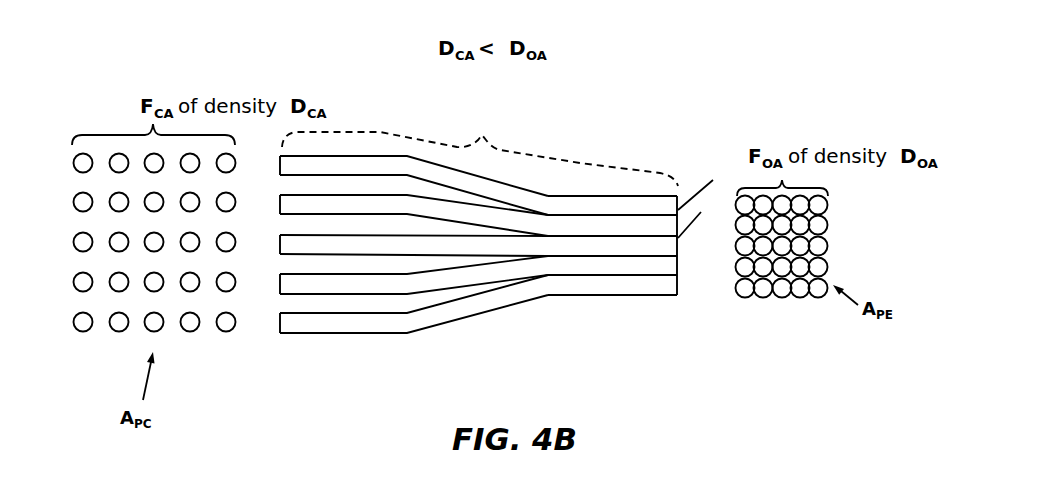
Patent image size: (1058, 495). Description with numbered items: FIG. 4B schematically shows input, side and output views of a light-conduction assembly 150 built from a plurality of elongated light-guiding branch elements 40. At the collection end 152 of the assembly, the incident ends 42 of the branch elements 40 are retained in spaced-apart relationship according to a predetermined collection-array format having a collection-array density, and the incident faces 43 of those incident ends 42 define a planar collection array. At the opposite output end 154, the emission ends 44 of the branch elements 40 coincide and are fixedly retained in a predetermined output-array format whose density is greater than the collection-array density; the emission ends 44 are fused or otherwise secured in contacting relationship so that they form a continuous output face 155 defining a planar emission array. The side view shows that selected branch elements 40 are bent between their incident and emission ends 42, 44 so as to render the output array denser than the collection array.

The light-guiding branch element 40 is at (400, 283).
The incident end 42 is at (224, 324).
The incident face 43 is at (279, 323).
The emission end 44 is at (685, 298).
The light-conduction assembly 150 is at (480, 145).
The collection end 152 is at (93, 358).
The output end 154 is at (684, 181).
The output face 155 is at (700, 211).